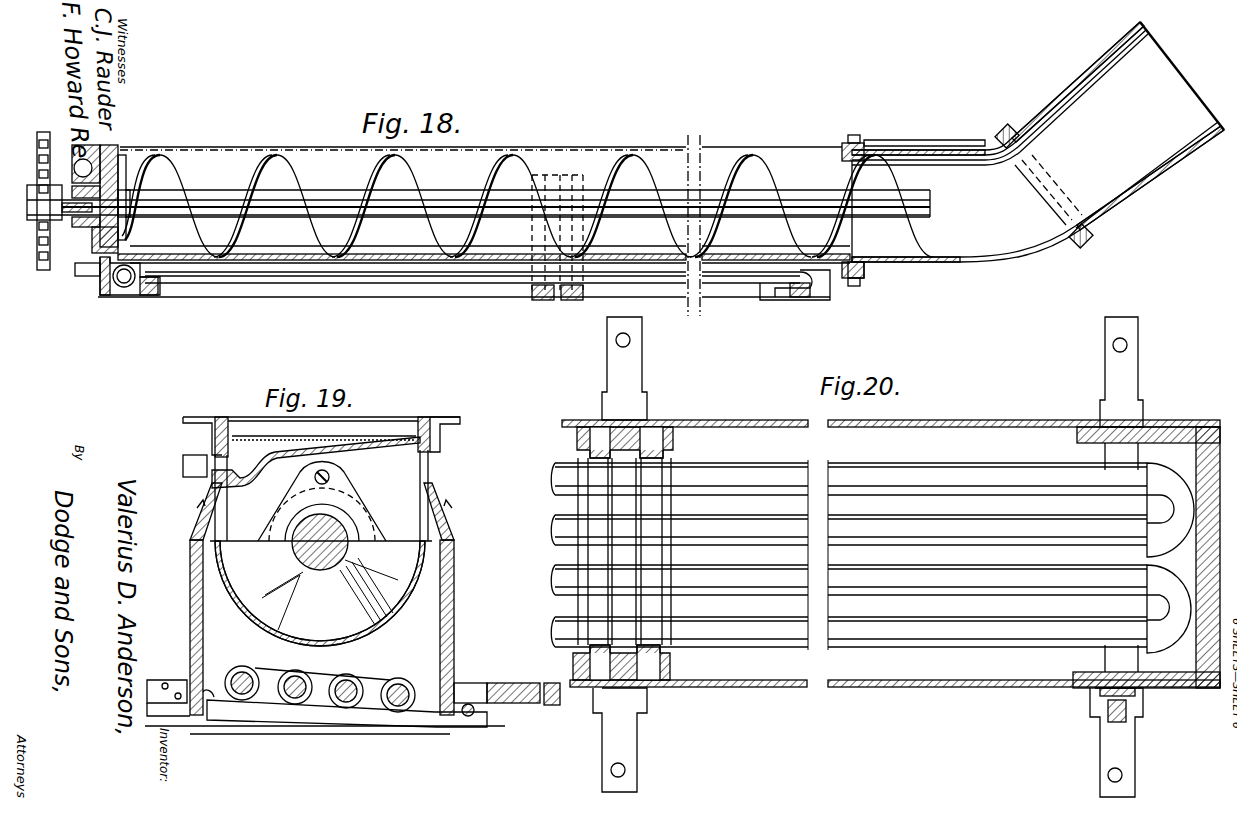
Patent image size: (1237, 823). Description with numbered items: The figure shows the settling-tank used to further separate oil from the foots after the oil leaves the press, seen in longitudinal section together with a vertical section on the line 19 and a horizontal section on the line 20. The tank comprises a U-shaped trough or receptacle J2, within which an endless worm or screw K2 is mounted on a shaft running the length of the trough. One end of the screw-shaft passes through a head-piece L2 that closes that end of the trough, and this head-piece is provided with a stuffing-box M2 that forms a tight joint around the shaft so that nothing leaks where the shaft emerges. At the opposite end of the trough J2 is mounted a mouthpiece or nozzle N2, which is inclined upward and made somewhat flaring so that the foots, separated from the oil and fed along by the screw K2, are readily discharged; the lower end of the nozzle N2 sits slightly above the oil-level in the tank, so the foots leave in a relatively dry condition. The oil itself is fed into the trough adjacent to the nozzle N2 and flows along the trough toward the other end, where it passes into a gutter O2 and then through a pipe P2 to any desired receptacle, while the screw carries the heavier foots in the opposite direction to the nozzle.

In FIG. 18, the section line 19- 19 is at (86, 150).
In FIG. 18, the section line 20- 20 is at (906, 290).
In FIG. 18, the U-shaped trough or receptacle J2 is at (505, 157).
In FIG. 19, the U-shaped trough or receptacle J2 is at (440, 603).
In FIG. 20, the U-shaped trough or receptacle J2 is at (773, 675).
In FIG. 18, the endless worm or screw K2 is at (288, 178).
In FIG. 19, the endless worm or screw K2 is at (338, 615).
In FIG. 18, the head-piece L2 is at (128, 170).
In FIG. 18, the stuffing-box M2 is at (90, 222).
In FIG. 18, the mouthpiece or nozzle N2 is at (1038, 142).
In FIG. 18, the gutter O2 is at (108, 150).
In FIG. 19, the gutter O2 is at (386, 428).
In FIG. 19, the pipe P2 is at (192, 470).